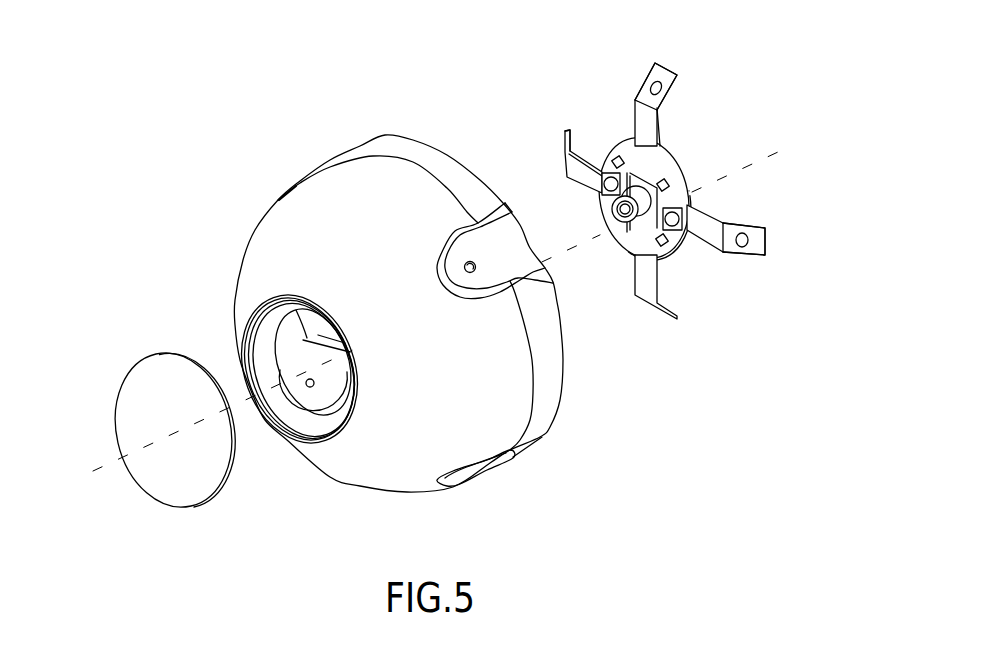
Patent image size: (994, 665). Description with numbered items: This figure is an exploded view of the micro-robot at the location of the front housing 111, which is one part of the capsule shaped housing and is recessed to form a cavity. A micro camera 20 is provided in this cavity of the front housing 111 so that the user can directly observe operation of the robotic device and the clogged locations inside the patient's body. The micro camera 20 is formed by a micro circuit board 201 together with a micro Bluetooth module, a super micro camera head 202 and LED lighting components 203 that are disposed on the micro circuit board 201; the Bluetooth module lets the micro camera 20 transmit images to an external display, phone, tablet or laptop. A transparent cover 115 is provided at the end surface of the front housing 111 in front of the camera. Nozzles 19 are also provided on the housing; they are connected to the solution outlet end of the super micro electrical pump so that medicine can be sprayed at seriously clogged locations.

The front housing 111 is at (281, 251).
The nozzles 19 is at (469, 260).
The transparent cover 115 is at (130, 403).
The micro camera 20 is at (675, 193).
The micro circuit board 201 is at (678, 252).
The super micro camera head 202 is at (626, 222).
The LED lighting components 203 is at (605, 175).